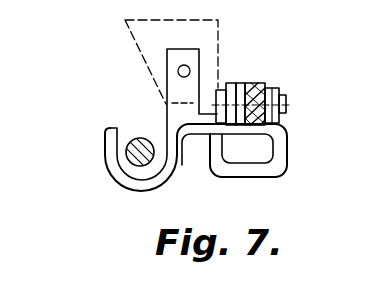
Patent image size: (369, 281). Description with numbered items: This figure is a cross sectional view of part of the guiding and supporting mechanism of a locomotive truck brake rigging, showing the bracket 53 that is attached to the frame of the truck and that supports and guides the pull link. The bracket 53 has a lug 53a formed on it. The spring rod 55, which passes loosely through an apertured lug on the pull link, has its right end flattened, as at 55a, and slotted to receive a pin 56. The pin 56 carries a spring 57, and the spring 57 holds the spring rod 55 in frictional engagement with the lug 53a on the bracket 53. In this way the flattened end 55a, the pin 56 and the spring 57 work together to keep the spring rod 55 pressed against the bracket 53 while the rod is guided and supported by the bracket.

The bracket 53 is at (108, 145).
The lug 53a is at (233, 83).
The spring rod 55 is at (286, 128).
The flattened end of spring rod 55a is at (246, 84).
The pin 56 is at (287, 104).
The spring 57 is at (259, 84).